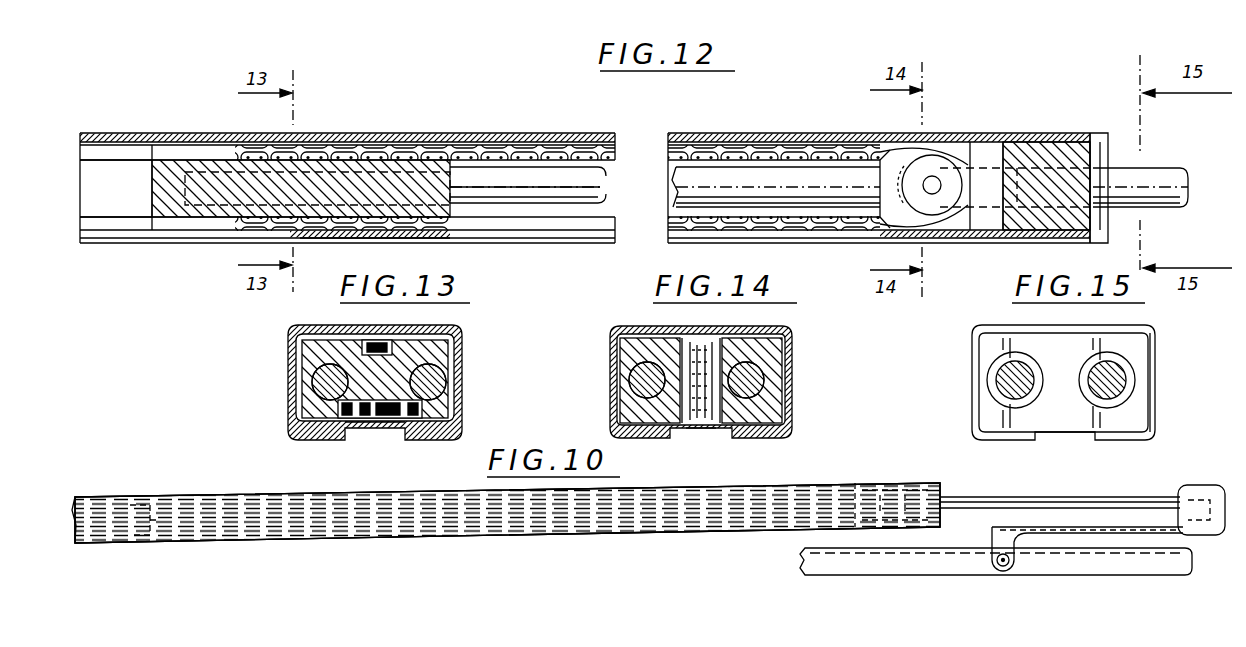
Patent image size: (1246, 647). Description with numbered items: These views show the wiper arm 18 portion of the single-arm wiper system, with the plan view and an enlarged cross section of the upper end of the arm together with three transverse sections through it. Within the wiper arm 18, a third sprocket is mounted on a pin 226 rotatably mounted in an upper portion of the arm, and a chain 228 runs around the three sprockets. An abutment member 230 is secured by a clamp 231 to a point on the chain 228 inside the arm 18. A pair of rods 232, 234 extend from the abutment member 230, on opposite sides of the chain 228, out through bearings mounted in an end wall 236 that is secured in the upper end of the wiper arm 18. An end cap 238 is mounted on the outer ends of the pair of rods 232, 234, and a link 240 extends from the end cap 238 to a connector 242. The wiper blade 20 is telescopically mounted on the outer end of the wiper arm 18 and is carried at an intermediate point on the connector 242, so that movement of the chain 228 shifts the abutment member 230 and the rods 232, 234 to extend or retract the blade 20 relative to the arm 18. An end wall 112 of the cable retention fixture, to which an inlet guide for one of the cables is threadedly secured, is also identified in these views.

In FIG. 12, the wiper arm 18 is at (537, 131).
In FIG. 13, the wiper arm 18 is at (463, 328).
In FIG. 14, the wiper arm 18 is at (622, 328).
In FIG. 15, the wiper arm 18 is at (986, 326).
In FIG. 10, the wiper arm 18 is at (244, 492).
In FIG. 10, the wiper blade 20 is at (910, 578).
In FIG. 12, the end wall 112 is at (903, 140).
In FIG. 14, the end wall 112 is at (712, 432).
In FIG. 10, the end wall 112 is at (893, 488).
In FIG. 12, the pin 226 is at (932, 185).
In FIG. 14, the pin 226 is at (760, 372).
In FIG. 12, the chain 228 is at (360, 132).
In FIG. 13, the chain 228 is at (372, 340).
In FIG. 14, the chain 228 is at (700, 432).
In FIG. 10, the chain 228 is at (720, 510).
In FIG. 12, the abutment member 230 is at (150, 195).
In FIG. 10, the abutment member 230 is at (135, 540).
In FIG. 12, the clamp 231 is at (310, 242).
In FIG. 13, the clamp 231 is at (375, 425).
In FIG. 12, the rod 232 is at (1160, 176).
In FIG. 13, the rod 232 is at (312, 382).
In FIG. 14, the rod 232 is at (640, 390).
In FIG. 15, the rod 232 is at (1125, 378).
In FIG. 13, the rod 234 is at (462, 382).
In FIG. 14, the rod 234 is at (780, 384).
In FIG. 15, the rod 234 is at (1010, 404).
In FIG. 10, the rod 234 is at (1060, 497).
In FIG. 12, the end wall 236 is at (1118, 140).
In FIG. 15, the end wall 236 is at (1135, 418).
In FIG. 10, the end cap 238 is at (1196, 485).
In FIG. 10, the link 240 is at (1120, 540).
In FIG. 10, the connector 242 is at (1008, 572).